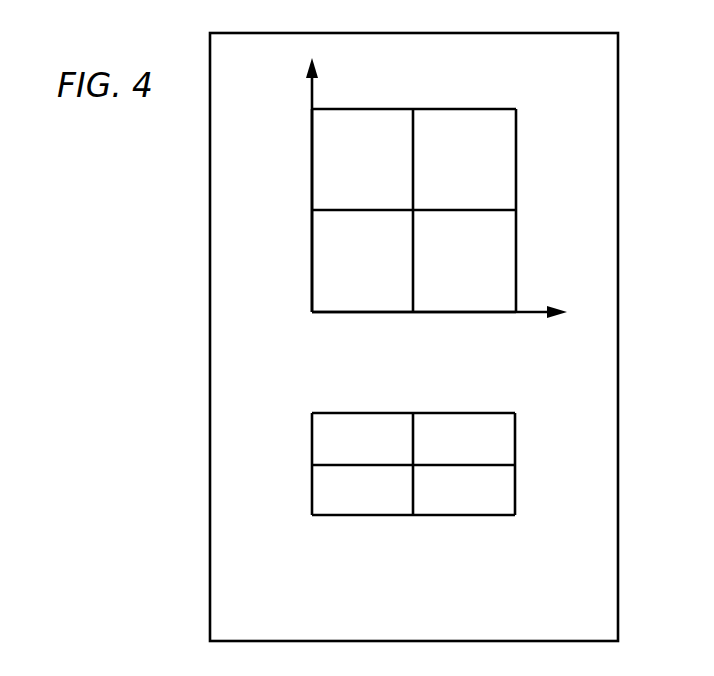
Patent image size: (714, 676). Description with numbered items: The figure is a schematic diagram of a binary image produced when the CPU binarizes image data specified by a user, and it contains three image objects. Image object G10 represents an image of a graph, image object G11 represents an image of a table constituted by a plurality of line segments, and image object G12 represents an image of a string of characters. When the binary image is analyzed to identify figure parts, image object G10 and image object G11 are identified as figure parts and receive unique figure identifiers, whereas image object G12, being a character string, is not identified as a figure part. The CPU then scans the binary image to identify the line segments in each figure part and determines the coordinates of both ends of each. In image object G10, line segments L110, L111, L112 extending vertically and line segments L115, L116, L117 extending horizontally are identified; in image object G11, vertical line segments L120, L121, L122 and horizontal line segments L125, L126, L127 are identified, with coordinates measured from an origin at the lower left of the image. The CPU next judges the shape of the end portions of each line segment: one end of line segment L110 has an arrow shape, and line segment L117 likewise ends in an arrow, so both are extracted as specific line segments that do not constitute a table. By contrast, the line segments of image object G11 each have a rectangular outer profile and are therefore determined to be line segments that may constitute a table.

The image object G10 is at (280, 256).
The image object G11 is at (245, 449).
The image object G12 is at (290, 596).
The line segment L110 is at (312, 160).
The line segment L111 is at (413, 152).
The line segment L112 is at (553, 135).
The line segment L115 is at (470, 109).
The line segment L116 is at (468, 211).
The line segment L117 is at (457, 312).
The line segment L120 is at (312, 430).
The line segment L121 is at (413, 450).
The line segment L122 is at (560, 420).
The line segment L125 is at (468, 397).
The line segment L126 is at (463, 465).
The line segment L127 is at (453, 515).